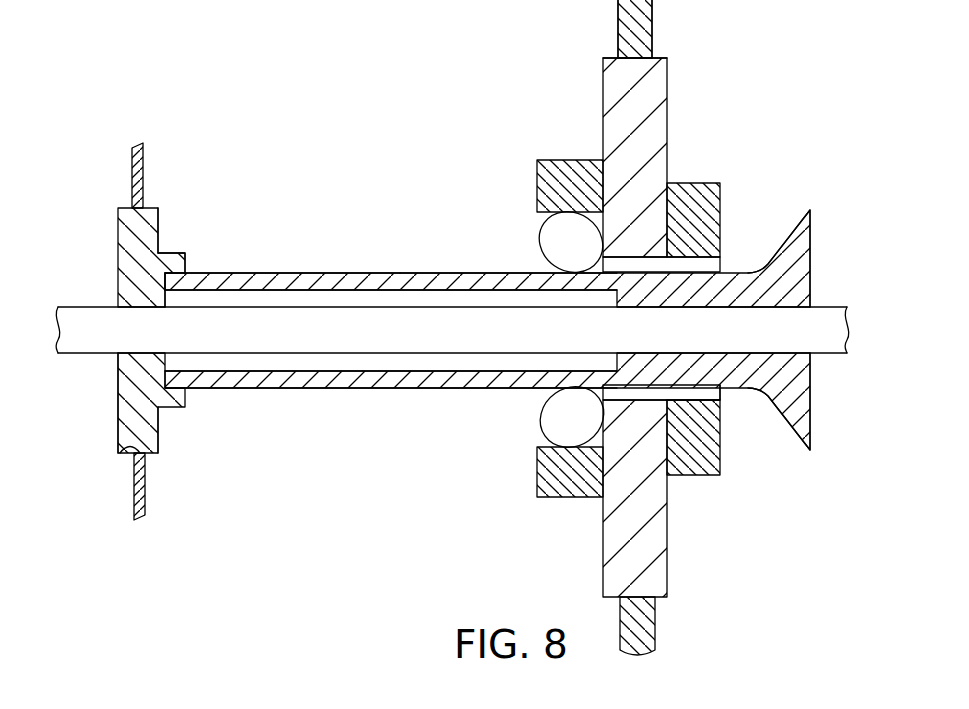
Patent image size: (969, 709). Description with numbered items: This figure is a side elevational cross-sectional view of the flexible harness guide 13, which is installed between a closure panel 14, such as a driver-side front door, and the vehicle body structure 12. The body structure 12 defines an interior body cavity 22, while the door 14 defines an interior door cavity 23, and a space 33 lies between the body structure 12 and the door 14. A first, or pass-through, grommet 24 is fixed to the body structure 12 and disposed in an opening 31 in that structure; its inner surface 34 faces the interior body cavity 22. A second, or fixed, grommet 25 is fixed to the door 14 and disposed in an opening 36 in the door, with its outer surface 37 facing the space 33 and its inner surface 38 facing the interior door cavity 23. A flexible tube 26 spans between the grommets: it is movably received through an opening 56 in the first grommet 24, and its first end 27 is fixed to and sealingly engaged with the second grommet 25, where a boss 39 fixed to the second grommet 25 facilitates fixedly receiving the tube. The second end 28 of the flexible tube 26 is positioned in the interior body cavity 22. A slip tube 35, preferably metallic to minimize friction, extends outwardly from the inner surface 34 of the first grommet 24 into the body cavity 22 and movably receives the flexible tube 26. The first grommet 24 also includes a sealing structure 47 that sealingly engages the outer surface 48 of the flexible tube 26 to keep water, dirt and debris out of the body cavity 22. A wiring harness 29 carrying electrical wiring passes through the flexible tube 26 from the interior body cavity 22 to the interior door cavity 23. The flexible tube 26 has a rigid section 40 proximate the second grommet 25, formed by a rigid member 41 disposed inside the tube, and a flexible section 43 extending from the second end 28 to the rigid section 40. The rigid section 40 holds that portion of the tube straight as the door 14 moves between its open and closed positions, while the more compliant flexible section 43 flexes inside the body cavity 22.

The vehicle body structure 12 is at (609, 32).
The flexible harness guide 13 is at (312, 437).
The closure panel 14 is at (124, 163).
The interior body cavity 22 is at (715, 160).
The interior door cavity 23 is at (86, 233).
The first grommet 24 is at (554, 506).
The second grommet 25 is at (172, 216).
The flexible tube 26 is at (343, 264).
The first end 27 is at (157, 278).
The second end 28 is at (785, 230).
The wiring harness 29 is at (830, 305).
The opening 31 is at (634, 60).
The space 33 is at (397, 258).
The inner surface 34 is at (722, 463).
The slip tube 35 is at (722, 389).
The opening 36 is at (120, 447).
The outer surface 37 is at (162, 440).
The inner surface 38 is at (118, 432).
The boss 39 is at (163, 254).
The rigid section 40 is at (263, 273).
The rigid member 41 is at (435, 384).
The flexible section 43 is at (730, 270).
The sealing structure 47 is at (541, 250).
The outer surface 48 is at (452, 273).
The opening 56 is at (643, 258).